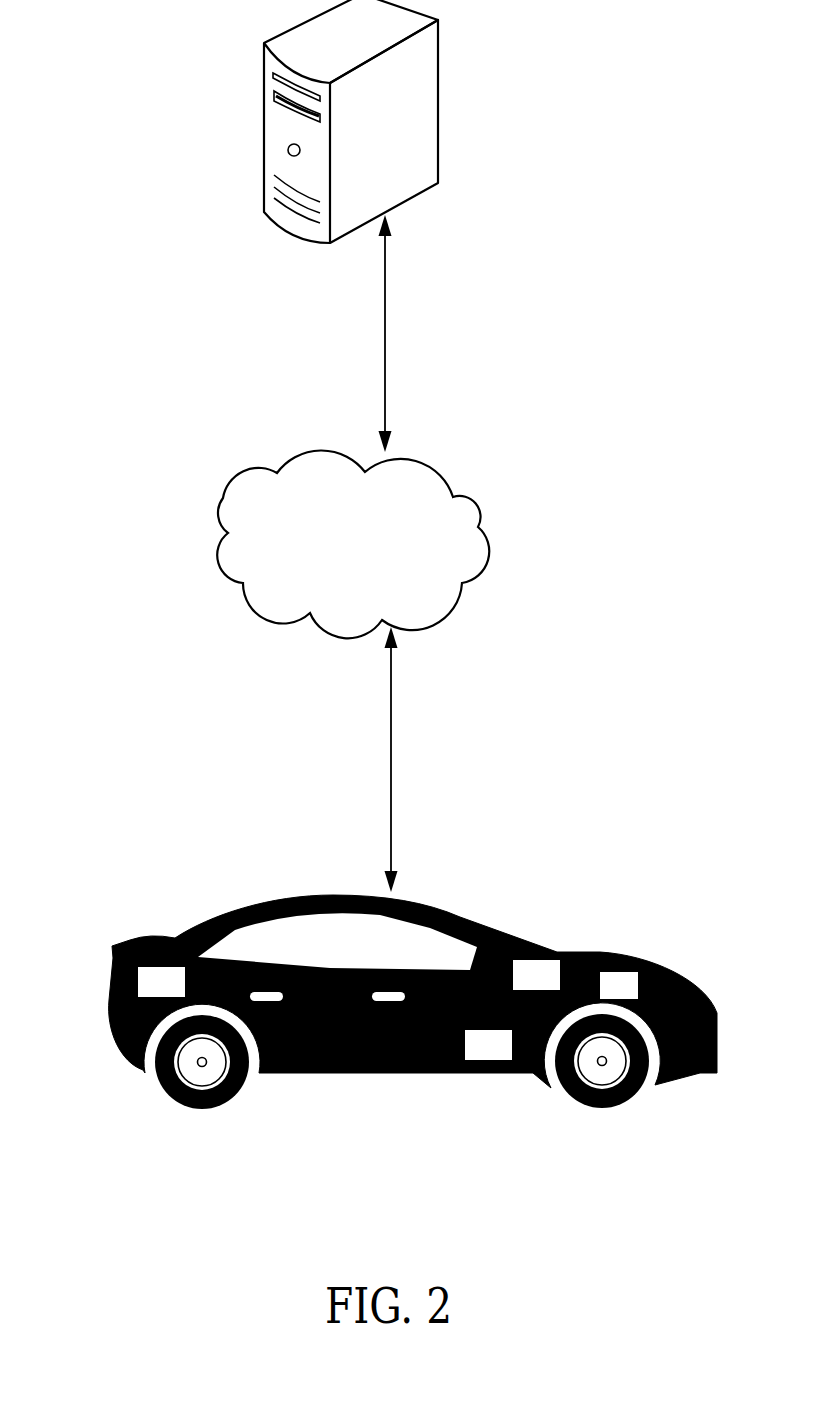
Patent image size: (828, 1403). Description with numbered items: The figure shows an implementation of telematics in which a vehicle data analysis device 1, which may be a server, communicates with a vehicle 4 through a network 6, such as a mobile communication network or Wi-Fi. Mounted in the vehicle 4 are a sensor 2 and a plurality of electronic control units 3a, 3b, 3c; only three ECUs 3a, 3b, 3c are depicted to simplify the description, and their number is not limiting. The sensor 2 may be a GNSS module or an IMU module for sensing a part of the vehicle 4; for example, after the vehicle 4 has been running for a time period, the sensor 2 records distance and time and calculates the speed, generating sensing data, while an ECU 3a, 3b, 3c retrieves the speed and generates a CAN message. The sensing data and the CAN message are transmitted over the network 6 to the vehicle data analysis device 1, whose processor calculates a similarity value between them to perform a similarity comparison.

The vehicle data analysis device 1 is at (438, 142).
The network 6 is at (215, 557).
The vehicle 4 is at (108, 990).
The sensor 2 is at (619, 985).
The electronic control unit 3a is at (536, 975).
The electronic control unit 3b is at (488, 1045).
The electronic control unit 3c is at (161, 982).